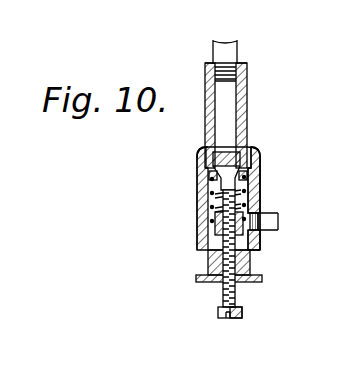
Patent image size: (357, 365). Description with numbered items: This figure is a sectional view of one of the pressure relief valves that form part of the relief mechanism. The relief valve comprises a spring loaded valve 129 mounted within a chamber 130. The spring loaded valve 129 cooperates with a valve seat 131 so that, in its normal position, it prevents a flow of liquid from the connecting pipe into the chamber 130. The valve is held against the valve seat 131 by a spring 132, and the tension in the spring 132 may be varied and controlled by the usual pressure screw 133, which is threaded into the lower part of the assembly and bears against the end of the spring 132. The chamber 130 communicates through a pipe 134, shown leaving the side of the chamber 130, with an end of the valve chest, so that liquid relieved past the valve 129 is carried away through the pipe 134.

The spring loaded valve 129 is at (249, 152).
The chamber 130 is at (260, 177).
The valve seat 131 is at (204, 148).
The spring 132 is at (206, 196).
The pressure screw 133 is at (248, 315).
The pipe 134 is at (272, 232).